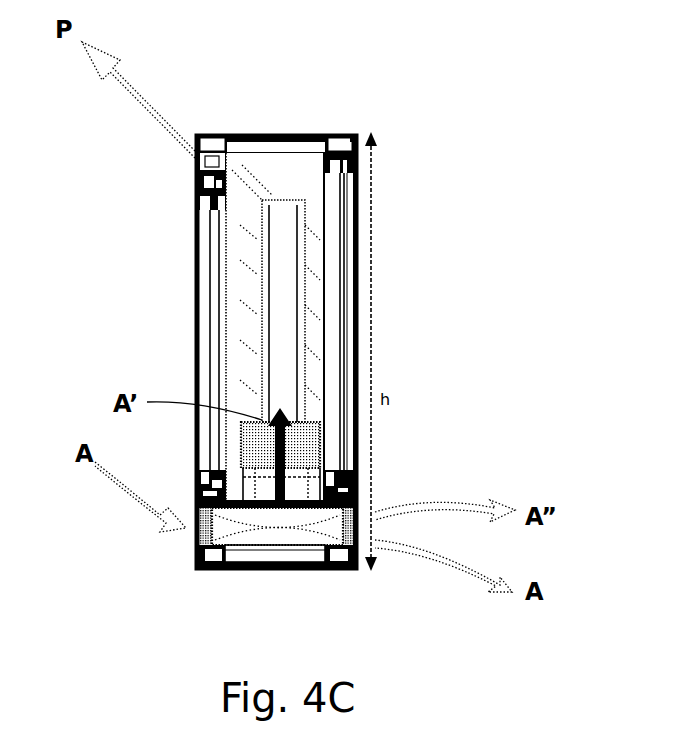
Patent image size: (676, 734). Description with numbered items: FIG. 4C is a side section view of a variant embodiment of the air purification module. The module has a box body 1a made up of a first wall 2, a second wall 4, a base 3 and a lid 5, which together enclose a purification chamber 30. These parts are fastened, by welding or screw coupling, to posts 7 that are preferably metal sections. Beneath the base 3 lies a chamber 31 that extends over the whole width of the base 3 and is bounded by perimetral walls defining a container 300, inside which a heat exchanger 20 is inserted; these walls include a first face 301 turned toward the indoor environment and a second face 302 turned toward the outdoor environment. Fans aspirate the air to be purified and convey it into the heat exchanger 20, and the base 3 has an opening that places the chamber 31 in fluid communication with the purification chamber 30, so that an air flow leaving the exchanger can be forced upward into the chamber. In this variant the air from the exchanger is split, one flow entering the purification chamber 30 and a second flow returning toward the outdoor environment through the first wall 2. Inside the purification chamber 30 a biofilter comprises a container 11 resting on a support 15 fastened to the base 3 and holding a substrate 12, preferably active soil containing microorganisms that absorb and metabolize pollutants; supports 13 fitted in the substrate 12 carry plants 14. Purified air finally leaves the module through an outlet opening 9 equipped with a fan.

The first wall 2 is at (360, 428).
The lid 5 is at (262, 134).
The posts 7 is at (200, 134).
The box body 1a is at (357, 135).
The outlet opening 9 is at (192, 165).
The second wall 4 is at (200, 360).
The purification chamber 30 is at (233, 296).
The plants 14 is at (283, 262).
The supports 13 is at (258, 342).
The container 11 is at (320, 445).
The substrate 12 is at (312, 545).
The support 15 is at (280, 530).
The heat exchanger 20 is at (262, 530).
The base 3 is at (198, 566).
The first face 301 is at (195, 548).
The second face 302 is at (360, 540).
The chamber 31 is at (215, 556).
The container 300 is at (350, 568).